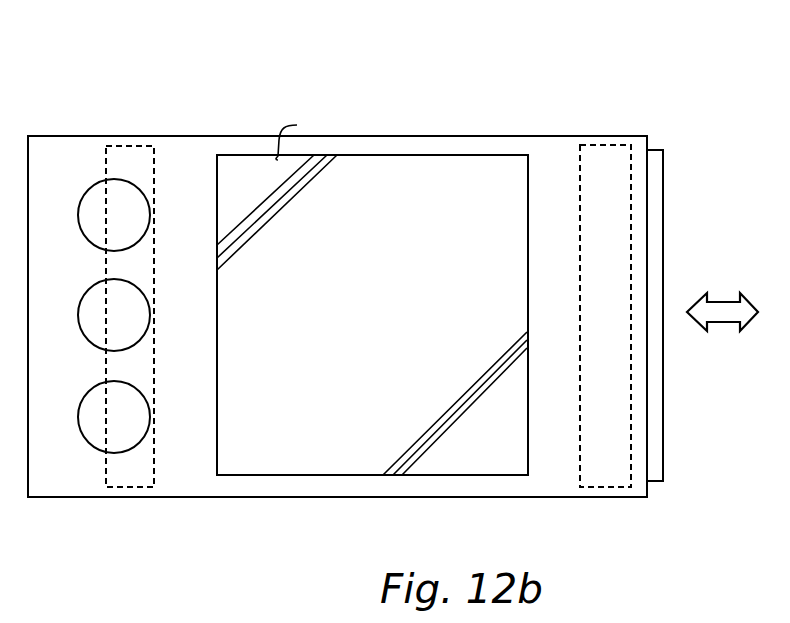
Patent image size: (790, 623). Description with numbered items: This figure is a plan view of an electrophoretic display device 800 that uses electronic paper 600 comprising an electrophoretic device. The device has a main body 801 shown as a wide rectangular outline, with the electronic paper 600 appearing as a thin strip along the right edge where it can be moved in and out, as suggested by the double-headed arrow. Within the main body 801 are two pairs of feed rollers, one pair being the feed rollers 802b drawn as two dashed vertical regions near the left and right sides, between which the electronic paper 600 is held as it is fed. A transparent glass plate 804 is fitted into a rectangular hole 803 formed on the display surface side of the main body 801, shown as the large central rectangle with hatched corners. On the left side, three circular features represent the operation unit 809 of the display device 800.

The electrophoretic display device 800 is at (540, 70).
The main body 801 is at (192, 150).
The feed rollers 802b is at (130, 146).
The rectangular hole 803 is at (307, 137).
The transparent glass plate 804 is at (390, 165).
The operation unit 809 is at (92, 186).
The electronic paper 600 is at (663, 192).